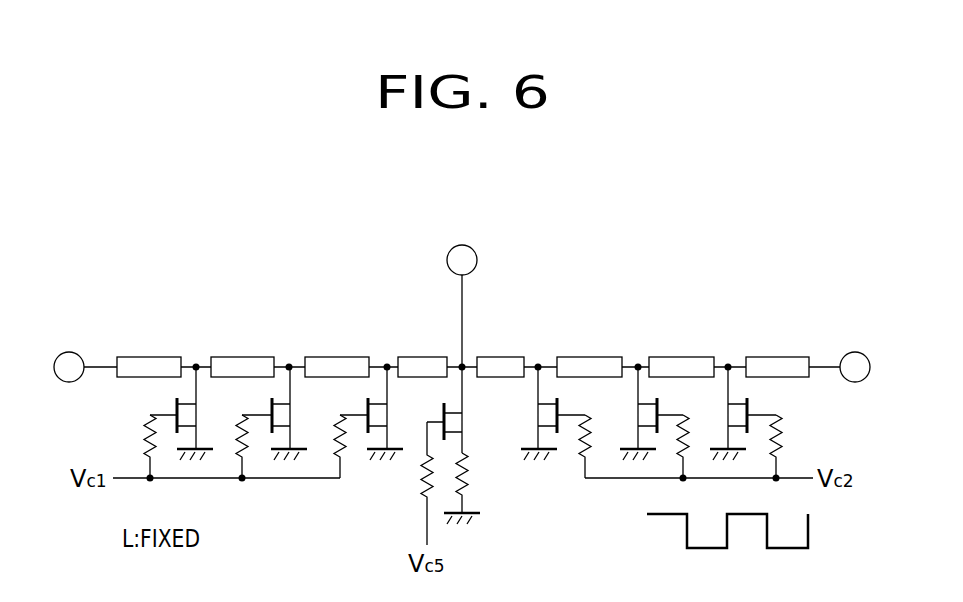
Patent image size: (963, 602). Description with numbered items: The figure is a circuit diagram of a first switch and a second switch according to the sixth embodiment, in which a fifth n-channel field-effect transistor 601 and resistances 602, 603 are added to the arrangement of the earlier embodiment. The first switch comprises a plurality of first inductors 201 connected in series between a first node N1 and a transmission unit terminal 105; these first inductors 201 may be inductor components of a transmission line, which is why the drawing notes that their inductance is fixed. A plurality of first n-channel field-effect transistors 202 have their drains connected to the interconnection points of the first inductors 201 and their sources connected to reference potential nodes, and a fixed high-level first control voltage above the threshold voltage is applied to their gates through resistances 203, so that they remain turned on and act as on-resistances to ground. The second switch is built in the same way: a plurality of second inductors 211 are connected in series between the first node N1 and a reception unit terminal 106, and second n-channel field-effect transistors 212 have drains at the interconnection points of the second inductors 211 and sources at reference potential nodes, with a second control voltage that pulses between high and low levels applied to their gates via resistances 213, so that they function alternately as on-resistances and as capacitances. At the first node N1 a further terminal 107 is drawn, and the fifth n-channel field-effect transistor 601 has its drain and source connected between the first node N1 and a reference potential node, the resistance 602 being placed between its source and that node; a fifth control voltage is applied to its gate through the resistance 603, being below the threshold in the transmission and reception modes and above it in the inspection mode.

The transmission unit terminal 105 is at (69, 352).
The reception unit terminal 106 is at (855, 352).
The control terminal 107 is at (477, 258).
The first node N1 is at (465, 363).
The first inductor 201 is at (145, 357).
The first n-channel field-effect transistor 202 is at (199, 415).
The resistance 203 is at (142, 437).
The second inductor 211 is at (493, 357).
The second n-channel field-effect transistor 212 is at (547, 413).
The resistance 213 is at (593, 437).
The fifth n-channel field-effect transistor 601 is at (462, 420).
The resistance 602 is at (468, 480).
The resistance 603 is at (420, 481).